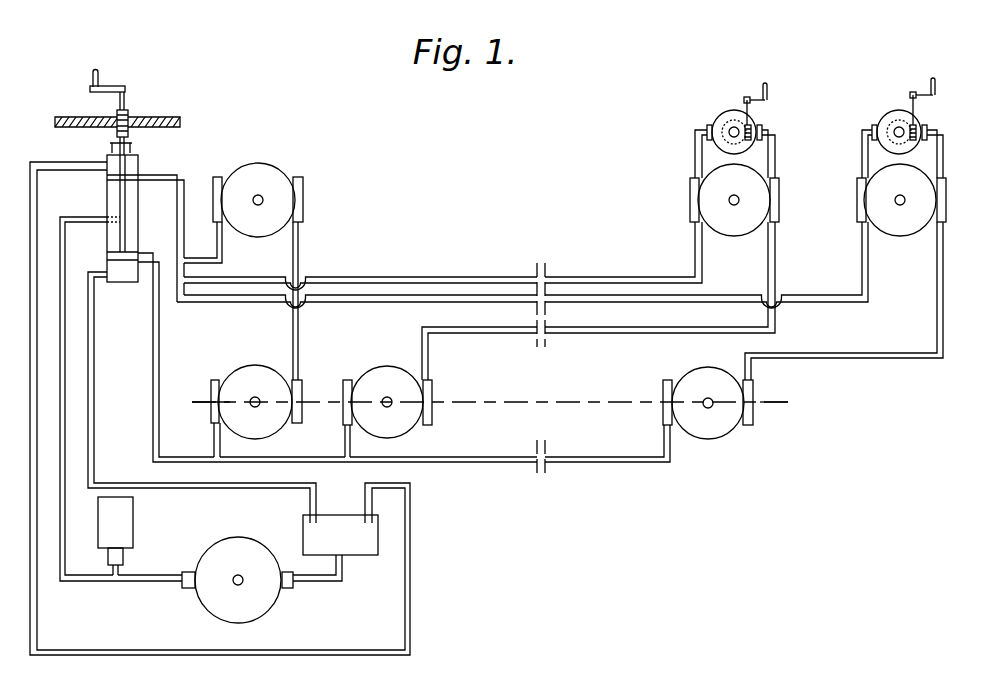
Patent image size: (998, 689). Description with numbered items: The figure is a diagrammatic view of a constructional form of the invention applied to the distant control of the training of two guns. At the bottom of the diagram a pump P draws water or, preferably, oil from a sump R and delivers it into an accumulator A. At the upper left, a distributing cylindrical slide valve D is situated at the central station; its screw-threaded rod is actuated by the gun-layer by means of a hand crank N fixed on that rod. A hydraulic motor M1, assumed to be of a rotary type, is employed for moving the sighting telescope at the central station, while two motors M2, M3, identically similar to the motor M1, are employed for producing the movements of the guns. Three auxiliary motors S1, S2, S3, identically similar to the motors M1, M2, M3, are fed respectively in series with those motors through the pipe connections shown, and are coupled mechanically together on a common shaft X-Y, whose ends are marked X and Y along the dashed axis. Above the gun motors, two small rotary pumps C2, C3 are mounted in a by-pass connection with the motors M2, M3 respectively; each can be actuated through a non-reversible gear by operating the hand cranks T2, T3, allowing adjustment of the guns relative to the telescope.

The hand crank N is at (89, 81).
The distributing cylindrical slide valve D is at (133, 211).
The hydraulic motor M1 is at (252, 225).
The motor M2 is at (727, 223).
The motor M3 is at (898, 223).
The small rotary pump C2 is at (722, 115).
The small rotary pump C3 is at (885, 115).
The hand crank T2 is at (772, 88).
The hand crank T3 is at (942, 78).
The auxiliary motor S1 is at (254, 375).
The auxiliary motor S2 is at (383, 367).
The auxiliary motor S3 is at (693, 377).
The common shaft end X is at (202, 402).
The common shaft end Y is at (785, 400).
The accumulator A is at (122, 528).
The pump P is at (247, 542).
The sump R is at (338, 513).